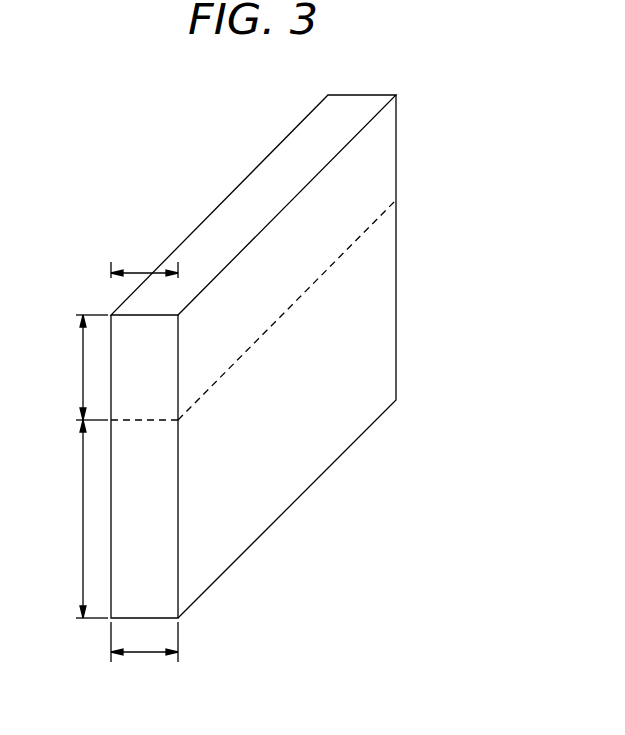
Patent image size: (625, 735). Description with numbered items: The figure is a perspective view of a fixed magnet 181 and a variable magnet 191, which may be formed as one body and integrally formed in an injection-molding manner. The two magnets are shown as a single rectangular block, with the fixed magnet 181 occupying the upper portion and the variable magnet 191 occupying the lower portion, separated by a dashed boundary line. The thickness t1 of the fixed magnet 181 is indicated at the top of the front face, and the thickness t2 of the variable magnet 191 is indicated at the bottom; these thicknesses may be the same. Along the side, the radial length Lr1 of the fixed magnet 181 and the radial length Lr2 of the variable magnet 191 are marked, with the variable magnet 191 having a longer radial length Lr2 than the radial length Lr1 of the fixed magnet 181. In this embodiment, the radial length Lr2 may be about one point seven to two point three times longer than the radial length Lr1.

The fixed magnet 181 is at (372, 163).
The variable magnet 191 is at (370, 325).
The thickness of the fixed magnet t1 is at (144, 262).
The thickness of the variable magnet t2 is at (144, 652).
The radial length of the fixed magnet Lr1 is at (74, 367).
The radial length of the variable magnet Lr2 is at (74, 519).